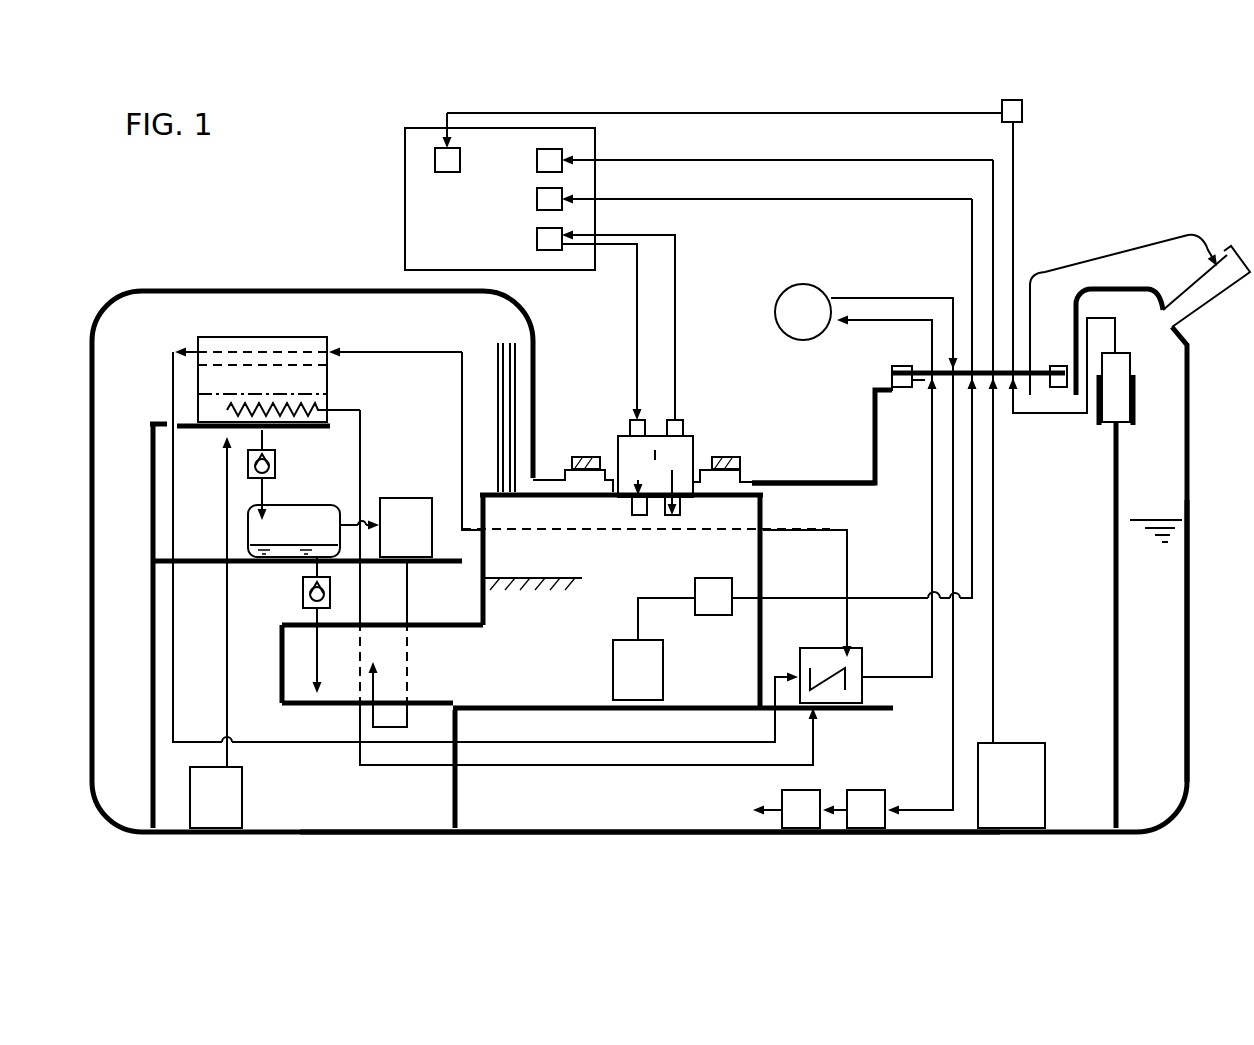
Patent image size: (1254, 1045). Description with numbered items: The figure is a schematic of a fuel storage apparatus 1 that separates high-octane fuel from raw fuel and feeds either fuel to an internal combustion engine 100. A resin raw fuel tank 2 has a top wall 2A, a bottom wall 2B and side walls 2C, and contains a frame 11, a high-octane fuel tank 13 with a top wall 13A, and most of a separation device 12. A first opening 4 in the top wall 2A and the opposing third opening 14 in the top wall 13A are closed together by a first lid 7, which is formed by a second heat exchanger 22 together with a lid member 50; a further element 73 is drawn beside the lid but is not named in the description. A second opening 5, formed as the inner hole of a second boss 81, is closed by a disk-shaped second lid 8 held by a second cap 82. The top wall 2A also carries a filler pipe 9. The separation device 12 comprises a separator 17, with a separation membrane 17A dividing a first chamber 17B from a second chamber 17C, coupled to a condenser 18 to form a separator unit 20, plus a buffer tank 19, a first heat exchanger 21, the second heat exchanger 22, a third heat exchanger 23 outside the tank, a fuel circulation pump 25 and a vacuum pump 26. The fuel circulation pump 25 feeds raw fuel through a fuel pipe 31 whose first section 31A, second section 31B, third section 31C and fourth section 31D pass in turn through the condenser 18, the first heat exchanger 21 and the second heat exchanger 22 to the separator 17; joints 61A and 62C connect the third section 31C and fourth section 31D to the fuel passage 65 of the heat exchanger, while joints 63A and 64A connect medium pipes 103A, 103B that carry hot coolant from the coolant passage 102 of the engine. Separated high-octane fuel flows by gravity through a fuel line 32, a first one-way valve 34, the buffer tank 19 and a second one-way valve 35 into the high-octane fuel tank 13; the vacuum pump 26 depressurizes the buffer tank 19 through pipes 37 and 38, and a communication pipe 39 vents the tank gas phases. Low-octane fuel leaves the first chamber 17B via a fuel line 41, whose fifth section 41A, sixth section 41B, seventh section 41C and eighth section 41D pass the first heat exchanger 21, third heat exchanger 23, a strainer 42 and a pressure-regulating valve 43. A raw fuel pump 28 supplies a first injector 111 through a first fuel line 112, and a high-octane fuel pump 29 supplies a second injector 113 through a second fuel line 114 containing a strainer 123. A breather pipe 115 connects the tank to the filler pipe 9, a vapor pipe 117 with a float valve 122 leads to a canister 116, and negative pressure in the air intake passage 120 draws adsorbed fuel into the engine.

The fuel storage apparatus 1 is at (140, 250).
The raw fuel tank 2 is at (1200, 498).
The top wall 2A is at (805, 482).
The bottom wall 2B is at (960, 836).
The side walls 2C is at (1190, 660).
The first opening 4 is at (715, 462).
The second opening 5 is at (912, 388).
The first lid 7 is at (590, 455).
The second lid 8 is at (947, 404).
The filler pipe 9 is at (1200, 312).
The frame 11 is at (1120, 700).
The separation device 12 is at (355, 375).
The high-octane fuel tank 13 is at (430, 628).
The top wall 13A is at (530, 498).
The third opening 14 is at (632, 512).
The separator 17 is at (304, 323).
The separation membrane 17A is at (232, 350).
The first chamber 17B is at (250, 360).
The second chamber 17C is at (300, 380).
The condenser 18 is at (208, 432).
The buffer tank 19 is at (302, 510).
The separator unit 20 is at (335, 335).
The first heat exchanger 21 is at (862, 653).
The second heat exchanger 22 is at (657, 460).
The third heat exchanger 23 is at (822, 288).
The fuel circulation pump 25 is at (244, 797).
The vacuum pump 26 is at (408, 497).
The raw fuel pump 28 is at (1046, 758).
The high-octane fuel pump 29 is at (612, 678).
The fuel pipe 31 is at (235, 680).
The first section 31A is at (230, 716).
The second section 31B is at (566, 768).
The third section 31C is at (850, 560).
The fourth section 31D is at (452, 350).
The fuel line 32 is at (270, 437).
The first one-way valve 34 is at (276, 462).
The second one-way valve 35 is at (302, 592).
The pipe 37 is at (364, 520).
The pipe 38 is at (410, 592).
The communication pipe 39 is at (500, 343).
The fuel line 41 is at (168, 345).
The fifth section 41A is at (170, 372).
The sixth section 41B is at (917, 703).
The seventh section 41C is at (950, 802).
The eighth section 41D is at (835, 808).
The strainer 42 is at (866, 830).
The pressure-regulating valve 43 is at (797, 830).
The lid member 50 is at (606, 465).
The joint 61A is at (680, 515).
The joint 62C is at (645, 520).
The joint 63A is at (630, 418).
The joint 64A is at (676, 418).
The fuel passage 65 is at (655, 448).
The seal 73 is at (742, 462).
The second boss 81 is at (898, 392).
The second cap 82 is at (890, 374).
The internal combustion engine 100 is at (400, 132).
The coolant passage 102 is at (535, 240).
The medium pipe 103A is at (635, 292).
The medium pipe 103B is at (678, 262).
The first injector 111 is at (535, 160).
The first fuel line 112 is at (705, 160).
The second injector 113 is at (535, 199).
The second fuel line 114 is at (762, 200).
The breather pipe 115 is at (1122, 248).
The canister 116 is at (1022, 113).
The vapor pipe 117 is at (1015, 190).
The air intake passage 120 is at (433, 160).
The float valve 122 is at (1118, 350).
The strainer 123 is at (712, 616).